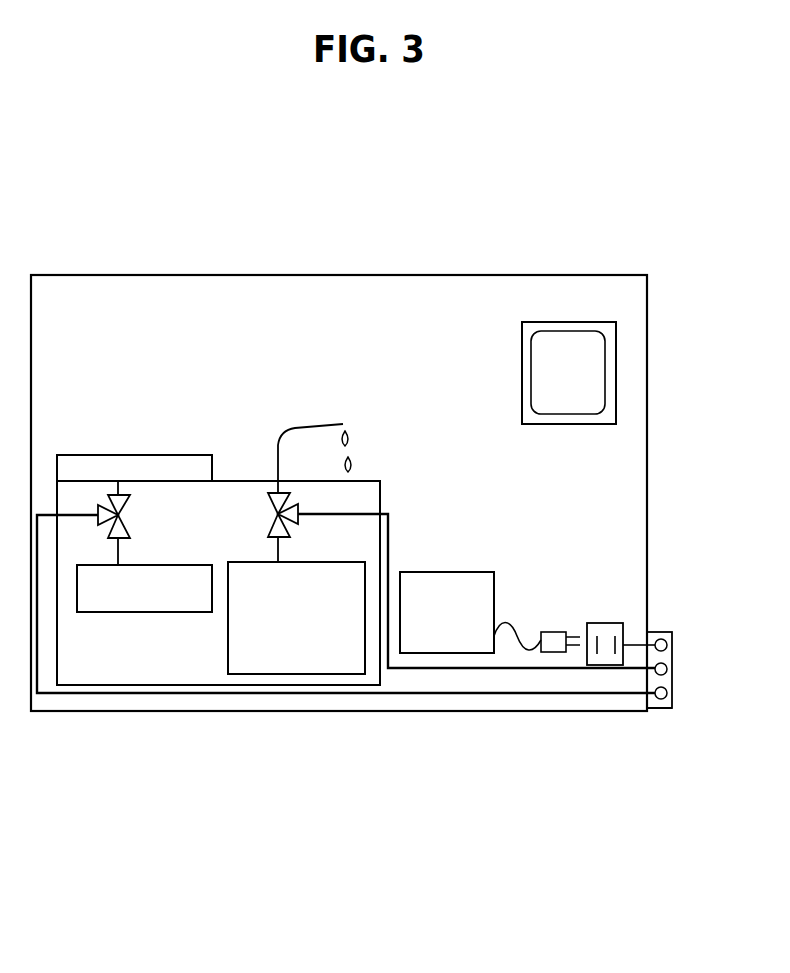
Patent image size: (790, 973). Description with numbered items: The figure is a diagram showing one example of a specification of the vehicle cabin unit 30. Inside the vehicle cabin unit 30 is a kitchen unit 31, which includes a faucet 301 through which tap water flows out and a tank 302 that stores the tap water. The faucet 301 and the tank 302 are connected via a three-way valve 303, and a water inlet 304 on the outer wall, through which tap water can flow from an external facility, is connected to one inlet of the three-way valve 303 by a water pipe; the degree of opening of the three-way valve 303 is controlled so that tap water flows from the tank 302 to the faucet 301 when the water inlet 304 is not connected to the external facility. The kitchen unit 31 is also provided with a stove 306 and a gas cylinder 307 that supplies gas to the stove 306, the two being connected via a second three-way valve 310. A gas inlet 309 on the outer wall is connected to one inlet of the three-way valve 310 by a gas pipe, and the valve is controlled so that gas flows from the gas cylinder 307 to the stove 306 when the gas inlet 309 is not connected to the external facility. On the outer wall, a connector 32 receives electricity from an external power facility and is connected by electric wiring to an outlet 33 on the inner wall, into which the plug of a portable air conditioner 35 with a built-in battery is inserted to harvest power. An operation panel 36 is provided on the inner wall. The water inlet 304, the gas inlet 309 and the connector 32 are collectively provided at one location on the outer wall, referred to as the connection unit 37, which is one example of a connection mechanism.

The vehicle cabin unit 30 is at (595, 274).
The kitchen unit 31 is at (203, 698).
The connector 32 is at (660, 640).
The outlet 33 is at (605, 658).
The portable air conditioner 35 is at (463, 650).
The operation panel 36 is at (542, 321).
The connection unit 37 is at (667, 710).
The faucet 301 is at (343, 424).
The tank 302 is at (326, 674).
The three-way valve 303 is at (278, 514).
The water inlet 304 is at (672, 672).
The stove 306 is at (100, 455).
The gas cylinder 307 is at (137, 612).
The gas inlet 309 is at (660, 700).
The three-way valve 310 is at (122, 514).